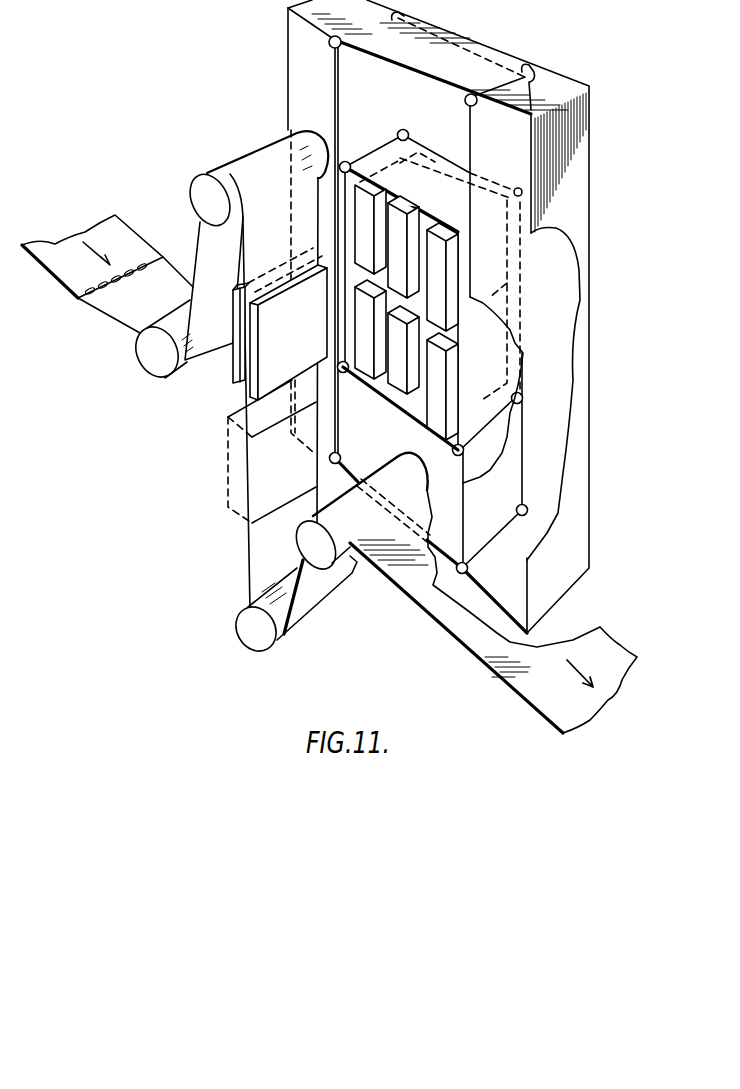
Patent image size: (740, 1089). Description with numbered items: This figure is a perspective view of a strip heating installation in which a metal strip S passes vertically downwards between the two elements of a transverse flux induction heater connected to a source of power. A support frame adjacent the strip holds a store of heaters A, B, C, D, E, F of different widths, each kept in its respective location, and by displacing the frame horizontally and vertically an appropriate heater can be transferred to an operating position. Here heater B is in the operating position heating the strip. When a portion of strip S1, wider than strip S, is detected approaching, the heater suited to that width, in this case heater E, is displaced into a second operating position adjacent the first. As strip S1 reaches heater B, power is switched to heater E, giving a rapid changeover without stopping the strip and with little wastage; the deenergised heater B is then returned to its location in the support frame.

The metal strip S is at (122, 313).
The strip of wider dimension S1 is at (70, 282).
The heater A is at (429, 277).
The heater B is at (267, 336).
The heater C is at (355, 233).
The heater D is at (427, 387).
The heater E is at (389, 363).
The heater F is at (355, 337).